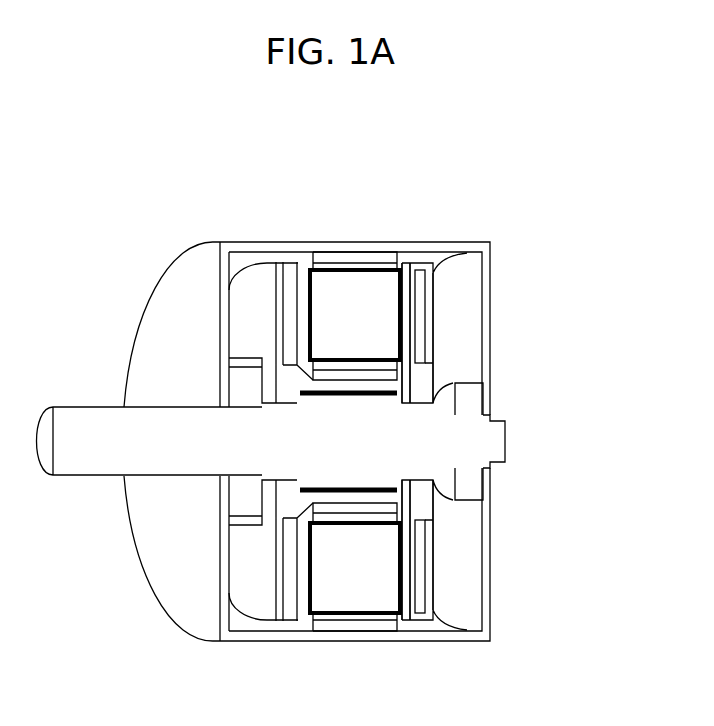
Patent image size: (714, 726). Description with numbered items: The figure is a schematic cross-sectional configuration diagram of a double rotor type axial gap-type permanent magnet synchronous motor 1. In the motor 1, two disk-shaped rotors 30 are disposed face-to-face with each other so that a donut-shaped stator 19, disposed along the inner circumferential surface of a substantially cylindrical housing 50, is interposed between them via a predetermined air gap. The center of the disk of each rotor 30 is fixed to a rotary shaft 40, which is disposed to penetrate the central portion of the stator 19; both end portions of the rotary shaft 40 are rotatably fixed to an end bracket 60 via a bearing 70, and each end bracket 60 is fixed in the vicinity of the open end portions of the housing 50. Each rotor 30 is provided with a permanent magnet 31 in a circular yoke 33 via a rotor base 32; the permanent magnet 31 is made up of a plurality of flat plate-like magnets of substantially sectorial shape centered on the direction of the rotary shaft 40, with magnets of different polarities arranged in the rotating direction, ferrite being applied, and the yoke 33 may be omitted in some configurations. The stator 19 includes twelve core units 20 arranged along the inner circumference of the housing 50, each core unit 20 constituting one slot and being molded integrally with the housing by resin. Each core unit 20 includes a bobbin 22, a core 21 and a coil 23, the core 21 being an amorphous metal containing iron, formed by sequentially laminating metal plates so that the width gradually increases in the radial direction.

The motor 1 is at (124, 212).
The stator 19 is at (350, 283).
The core unit 20 is at (460, 190).
The core 21 is at (322, 270).
The bobbin 22 is at (387, 253).
The coil 23 is at (368, 265).
The rotor 30 is at (568, 280).
The permanent magnet 31 is at (410, 305).
The rotor base 32 is at (423, 340).
The yoke 33 is at (423, 380).
The rotary shaft 40 is at (498, 433).
The housing 50 is at (455, 642).
The end bracket 60 is at (160, 600).
The bearing 70 is at (243, 387).